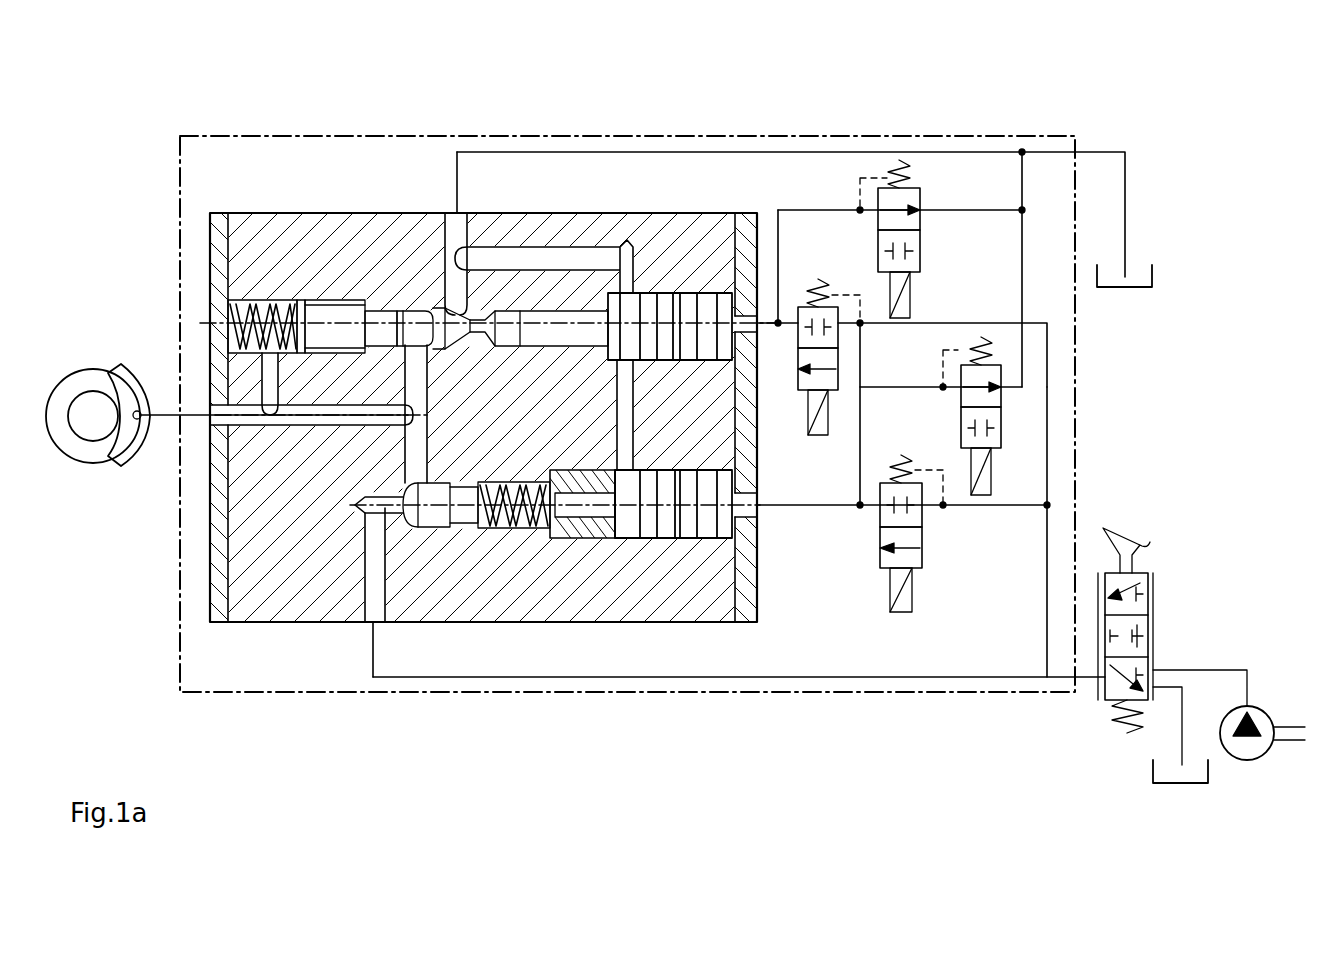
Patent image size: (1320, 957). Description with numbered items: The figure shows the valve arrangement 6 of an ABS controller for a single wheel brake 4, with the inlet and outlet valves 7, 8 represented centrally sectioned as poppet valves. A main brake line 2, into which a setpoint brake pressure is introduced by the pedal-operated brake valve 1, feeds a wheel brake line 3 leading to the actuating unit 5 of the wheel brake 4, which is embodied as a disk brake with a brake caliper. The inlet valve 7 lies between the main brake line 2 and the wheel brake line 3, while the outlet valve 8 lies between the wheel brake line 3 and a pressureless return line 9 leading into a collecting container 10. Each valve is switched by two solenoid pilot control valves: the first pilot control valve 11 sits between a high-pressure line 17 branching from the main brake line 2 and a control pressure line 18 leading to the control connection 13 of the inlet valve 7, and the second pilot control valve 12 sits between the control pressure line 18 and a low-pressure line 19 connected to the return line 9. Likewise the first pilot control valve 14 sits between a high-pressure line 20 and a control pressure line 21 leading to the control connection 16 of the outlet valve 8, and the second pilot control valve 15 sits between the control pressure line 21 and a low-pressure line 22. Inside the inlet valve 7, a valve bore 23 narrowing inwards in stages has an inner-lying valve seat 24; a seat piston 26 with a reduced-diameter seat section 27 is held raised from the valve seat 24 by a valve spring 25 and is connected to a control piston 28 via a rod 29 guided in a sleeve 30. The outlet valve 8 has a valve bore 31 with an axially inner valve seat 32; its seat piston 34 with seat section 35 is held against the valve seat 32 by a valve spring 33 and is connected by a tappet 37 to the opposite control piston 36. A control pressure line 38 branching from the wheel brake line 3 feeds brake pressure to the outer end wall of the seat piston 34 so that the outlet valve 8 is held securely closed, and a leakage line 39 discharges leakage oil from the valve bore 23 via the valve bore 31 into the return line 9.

The brake valve 1 is at (1185, 626).
The main brake line 2 is at (836, 678).
The wheel brake line 3 is at (165, 420).
The wheel brake 4 is at (68, 492).
The actuating unit 5 is at (128, 445).
The valve arrangement 6 is at (1075, 388).
The inlet valve 7 is at (494, 575).
The outlet valve 8 is at (361, 265).
The return line 9 is at (1123, 201).
The collecting container 10 is at (1152, 266).
The first pilot control valve 11 is at (922, 530).
The second pilot control valve 12 is at (1001, 412).
The control connection 13 is at (762, 505).
The first pilot control valve 14 is at (838, 356).
The second pilot control valve 15 is at (920, 223).
The control connection 16 is at (765, 322).
The high-pressure line 17 is at (1025, 505).
The control pressure line 18 is at (822, 505).
The low-pressure line 19 is at (1060, 347).
The high-pressure line 20 is at (948, 323).
The control pressure line 21 is at (792, 320).
The low-pressure line 22 is at (968, 210).
The valve bore 23 is at (606, 540).
The valve seat 24 is at (398, 555).
The valve spring 25 is at (512, 528).
The seat piston 26 is at (468, 517).
The seat section 27 is at (432, 513).
The control piston 28 is at (690, 517).
The rod 29 is at (575, 517).
The sleeve 30 is at (598, 530).
The valve bore 31 is at (331, 300).
The valve seat 32 is at (440, 280).
The valve spring 33 is at (258, 300).
The seat piston 34 is at (376, 310).
The seat section 35 is at (417, 308).
The control piston 36 is at (686, 318).
The tappet 37 is at (515, 315).
The control pressure line 38 is at (267, 382).
The leakage line 39 is at (567, 262).